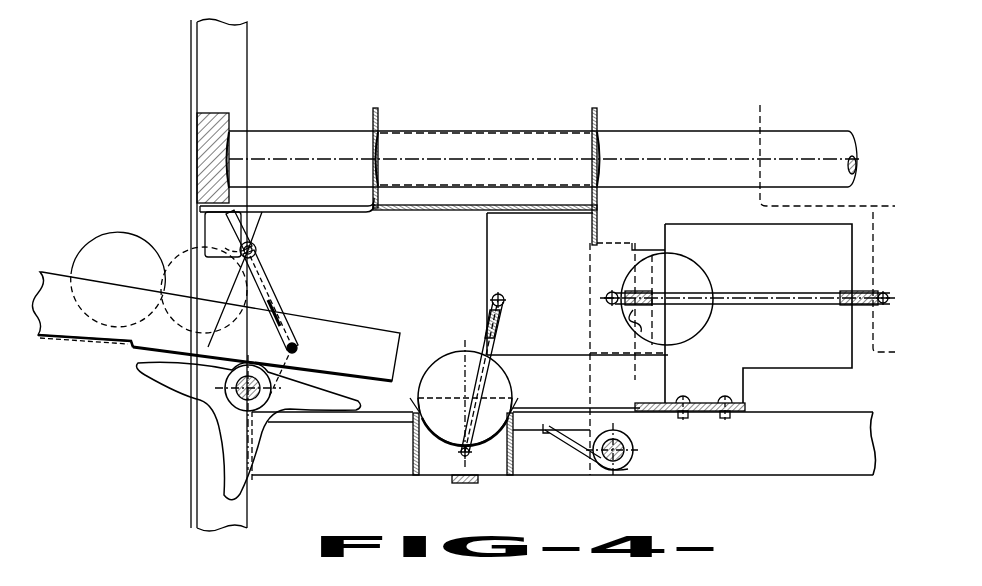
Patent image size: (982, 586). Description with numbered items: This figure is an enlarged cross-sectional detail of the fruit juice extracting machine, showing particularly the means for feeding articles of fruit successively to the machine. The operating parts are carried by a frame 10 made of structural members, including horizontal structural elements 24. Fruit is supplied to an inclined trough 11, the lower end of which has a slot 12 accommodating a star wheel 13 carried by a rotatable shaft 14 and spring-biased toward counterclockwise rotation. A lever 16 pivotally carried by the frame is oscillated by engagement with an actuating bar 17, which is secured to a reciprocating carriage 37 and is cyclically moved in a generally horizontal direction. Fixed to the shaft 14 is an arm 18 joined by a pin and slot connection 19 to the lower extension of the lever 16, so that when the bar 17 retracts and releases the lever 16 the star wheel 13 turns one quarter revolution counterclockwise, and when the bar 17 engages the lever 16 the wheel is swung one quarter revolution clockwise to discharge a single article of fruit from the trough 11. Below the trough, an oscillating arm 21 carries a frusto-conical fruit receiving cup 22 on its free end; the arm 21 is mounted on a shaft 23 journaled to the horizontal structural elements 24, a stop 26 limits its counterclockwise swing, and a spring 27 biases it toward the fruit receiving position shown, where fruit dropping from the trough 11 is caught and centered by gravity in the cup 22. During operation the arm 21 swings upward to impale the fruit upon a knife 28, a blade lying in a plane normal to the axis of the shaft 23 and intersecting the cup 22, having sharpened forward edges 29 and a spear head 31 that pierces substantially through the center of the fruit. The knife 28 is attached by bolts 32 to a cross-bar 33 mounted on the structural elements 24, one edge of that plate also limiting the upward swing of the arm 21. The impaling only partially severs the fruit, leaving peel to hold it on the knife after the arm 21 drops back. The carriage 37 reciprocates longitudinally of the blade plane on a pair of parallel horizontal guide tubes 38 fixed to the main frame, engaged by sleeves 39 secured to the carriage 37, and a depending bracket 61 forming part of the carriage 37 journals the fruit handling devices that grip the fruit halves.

The frame 10 is at (188, 190).
The inclined trough 11 is at (92, 332).
The slot 12 is at (132, 346).
The star wheel 13 is at (180, 381).
The rotatable shaft 14 is at (212, 416).
The lever 16 is at (256, 256).
The actuating bar 17 is at (334, 210).
The arm 18 is at (298, 351).
The pin and slot connection 19 is at (288, 344).
The oscillating arm 21 is at (531, 468).
The fruit receiving cup 22 is at (428, 442).
The shaft 23 is at (620, 467).
The horizontal structural elements 24 is at (762, 466).
The stop 26 is at (463, 481).
The spring 27 is at (567, 443).
The knife 28 is at (806, 367).
The forward edges 29 is at (665, 230).
The spear head 31 is at (633, 318).
The bolts 32 is at (727, 400).
The cross-bar 33 is at (665, 412).
The carriage 37 is at (456, 211).
The guide tubes 38 is at (636, 131).
The sleeves 39 is at (486, 128).
The depending bracket 61 is at (496, 258).